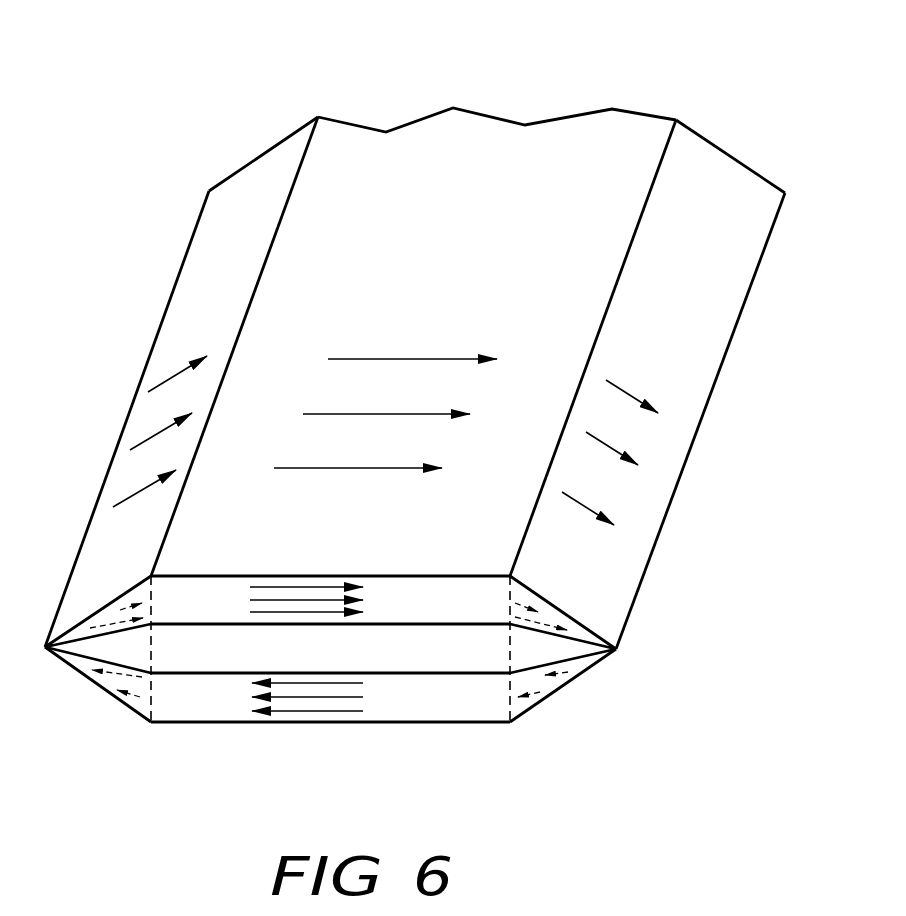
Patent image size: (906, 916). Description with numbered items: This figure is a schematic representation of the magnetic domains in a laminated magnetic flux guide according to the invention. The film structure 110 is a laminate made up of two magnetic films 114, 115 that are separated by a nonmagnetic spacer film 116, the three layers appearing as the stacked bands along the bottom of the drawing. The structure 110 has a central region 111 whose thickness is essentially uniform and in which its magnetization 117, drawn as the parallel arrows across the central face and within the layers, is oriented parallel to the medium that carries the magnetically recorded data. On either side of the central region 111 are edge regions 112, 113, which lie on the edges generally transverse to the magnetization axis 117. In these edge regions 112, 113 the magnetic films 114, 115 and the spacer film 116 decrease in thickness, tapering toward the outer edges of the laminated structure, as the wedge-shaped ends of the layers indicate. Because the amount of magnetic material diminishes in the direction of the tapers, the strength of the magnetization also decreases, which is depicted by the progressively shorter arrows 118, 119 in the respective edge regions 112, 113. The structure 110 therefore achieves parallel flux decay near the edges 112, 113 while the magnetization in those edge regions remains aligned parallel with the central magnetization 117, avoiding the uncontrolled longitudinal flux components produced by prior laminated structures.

The laminated film structure 110 is at (426, 87).
The central region 111 is at (521, 142).
The edge region 112 is at (263, 162).
The edge region 113 is at (695, 153).
The magnetic film 114 is at (237, 710).
The magnetic film 115 is at (180, 587).
The nonmagnetic spacer film 116 is at (182, 663).
The magnetization 117 is at (433, 360).
The arrows 118 is at (170, 378).
The arrows 119 is at (628, 392).